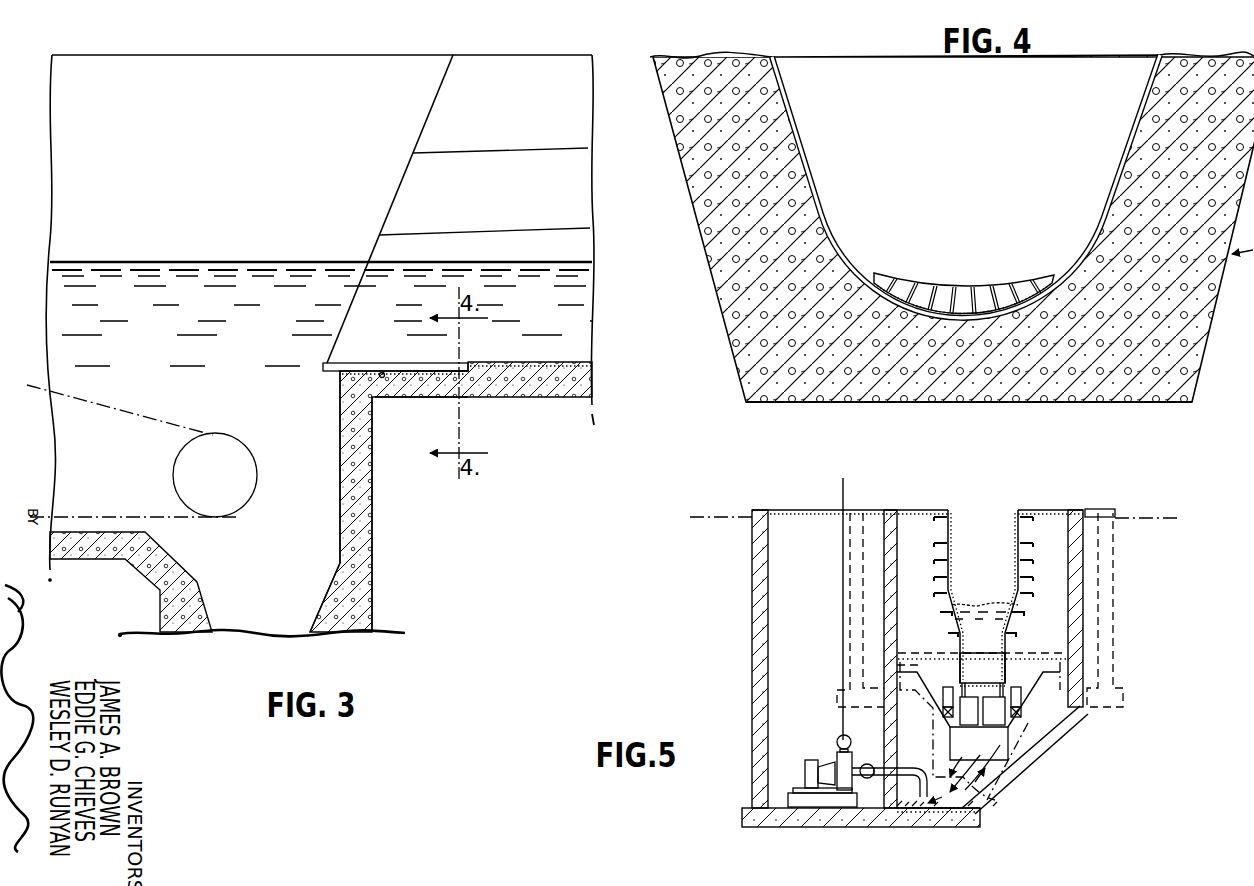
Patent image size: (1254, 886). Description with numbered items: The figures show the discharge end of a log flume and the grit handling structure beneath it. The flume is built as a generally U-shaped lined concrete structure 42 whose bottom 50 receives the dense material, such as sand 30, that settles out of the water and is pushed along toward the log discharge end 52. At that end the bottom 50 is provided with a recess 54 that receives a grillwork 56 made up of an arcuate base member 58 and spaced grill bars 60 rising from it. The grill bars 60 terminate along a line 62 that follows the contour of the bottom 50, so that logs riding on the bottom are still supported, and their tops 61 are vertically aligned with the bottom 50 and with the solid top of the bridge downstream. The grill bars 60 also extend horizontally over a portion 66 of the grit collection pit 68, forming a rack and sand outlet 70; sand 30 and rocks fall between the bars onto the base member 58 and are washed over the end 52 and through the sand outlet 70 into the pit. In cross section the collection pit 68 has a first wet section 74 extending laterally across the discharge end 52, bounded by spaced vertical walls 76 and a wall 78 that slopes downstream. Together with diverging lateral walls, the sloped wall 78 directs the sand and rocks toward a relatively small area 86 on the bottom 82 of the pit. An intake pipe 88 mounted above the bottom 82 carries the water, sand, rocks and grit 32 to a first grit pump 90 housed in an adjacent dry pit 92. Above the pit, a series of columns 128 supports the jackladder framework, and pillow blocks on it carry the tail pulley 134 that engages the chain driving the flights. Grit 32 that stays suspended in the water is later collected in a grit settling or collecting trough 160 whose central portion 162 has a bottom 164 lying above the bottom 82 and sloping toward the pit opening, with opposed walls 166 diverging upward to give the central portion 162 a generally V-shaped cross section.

In FIG. 3, the log discharge end 52 is at (430, 107).
In FIG. 3, the sand outlet 70 is at (334, 361).
In FIG. 3, the tops of the grill bars 61 is at (368, 363).
In FIG. 3, the grillwork 56 is at (402, 370).
In FIG. 4, the grillwork 56 is at (963, 277).
In FIG. 3, the bottom of the flume 50 is at (530, 362).
In FIG. 3, the recess 54 is at (381, 378).
In FIG. 3, the arcuate base member 58 is at (428, 380).
In FIG. 4, the arcuate base member 58 is at (978, 318).
In FIG. 3, the portion of the grit collection pit 66 is at (310, 477).
In FIG. 3, the grit collection pit 68 is at (292, 616).
In FIG. 5, the grit collection pit 68 is at (980, 803).
In FIG. 4, the lined concrete structure 42 is at (1127, 148).
In FIG. 4, the line 62 is at (934, 280).
In FIG. 4, the grill bars 60 is at (1012, 282).
In FIG. 5, the dry pit 92 is at (783, 680).
In FIG. 5, the vertical walls 76 is at (907, 719).
In FIG. 5, the intake pipe 88 is at (917, 768).
In FIG. 5, the first grit pump 90 is at (843, 780).
In FIG. 5, the sand 30 is at (905, 814).
In FIG. 5, the relatively small area 86 is at (920, 816).
In FIG. 5, the bottom of the collection pit 82 is at (938, 810).
In FIG. 5, the first wet section 74 is at (940, 788).
In FIG. 5, the opposed walls 166 is at (933, 678).
In FIG. 5, the columns 128 is at (961, 690).
In FIG. 5, the tail pulley 134 is at (995, 707).
In FIG. 5, the grit settling or collecting trough 160 is at (1032, 708).
In FIG. 5, the sloped wall 78 is at (1040, 708).
In FIG. 5, the central portion 162 is at (997, 729).
In FIG. 5, the bottom of the central portion 164 is at (993, 738).
In FIG. 5, the grit 32 is at (967, 806).